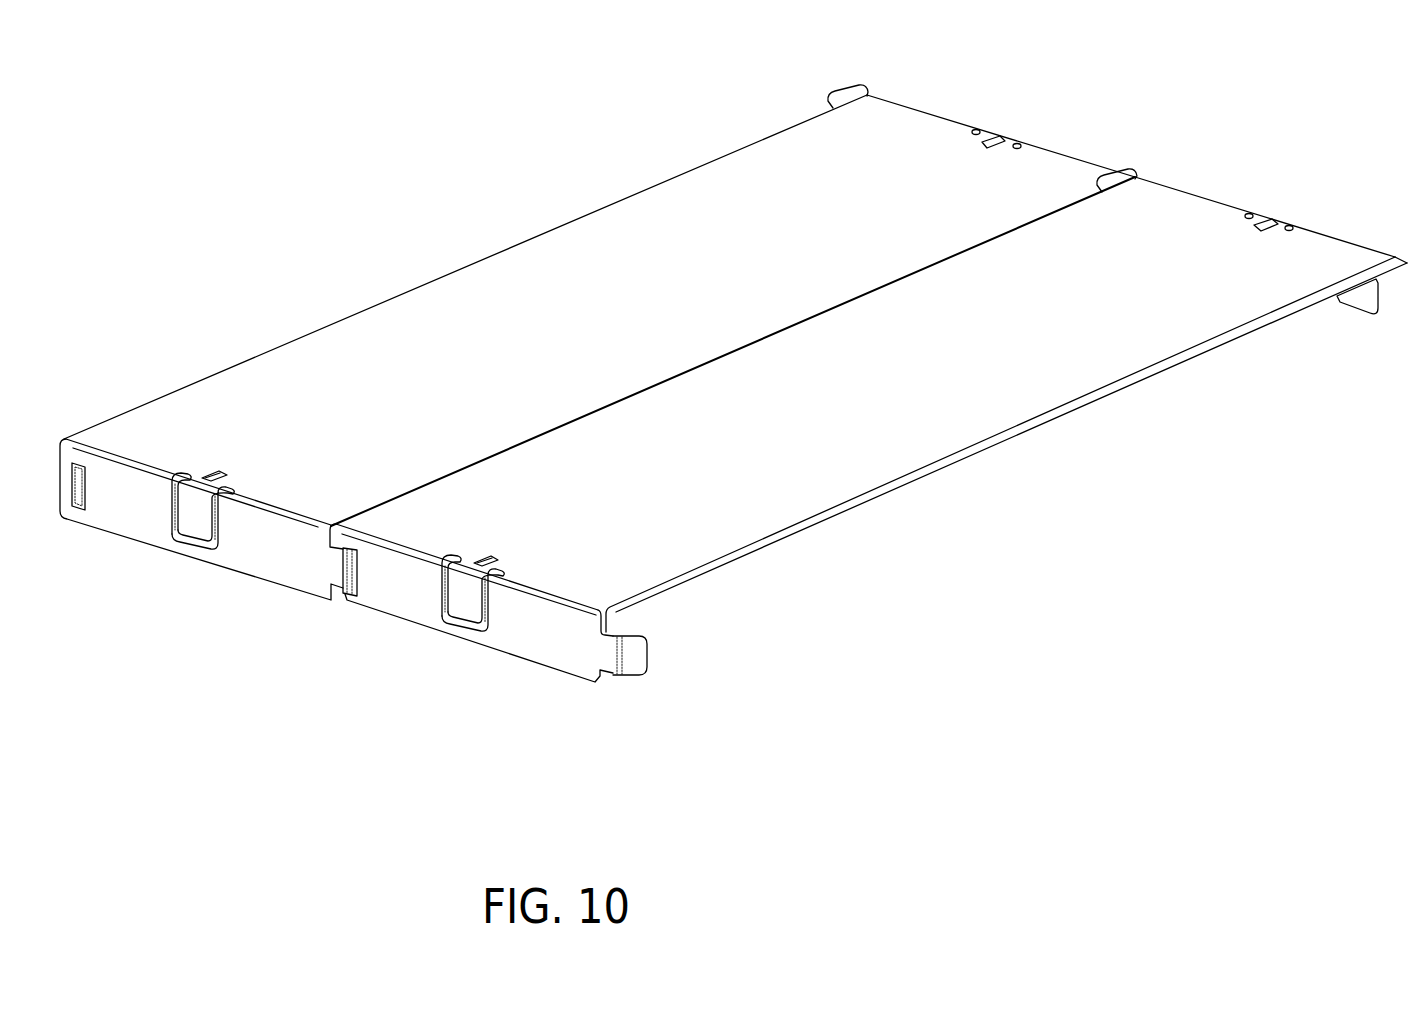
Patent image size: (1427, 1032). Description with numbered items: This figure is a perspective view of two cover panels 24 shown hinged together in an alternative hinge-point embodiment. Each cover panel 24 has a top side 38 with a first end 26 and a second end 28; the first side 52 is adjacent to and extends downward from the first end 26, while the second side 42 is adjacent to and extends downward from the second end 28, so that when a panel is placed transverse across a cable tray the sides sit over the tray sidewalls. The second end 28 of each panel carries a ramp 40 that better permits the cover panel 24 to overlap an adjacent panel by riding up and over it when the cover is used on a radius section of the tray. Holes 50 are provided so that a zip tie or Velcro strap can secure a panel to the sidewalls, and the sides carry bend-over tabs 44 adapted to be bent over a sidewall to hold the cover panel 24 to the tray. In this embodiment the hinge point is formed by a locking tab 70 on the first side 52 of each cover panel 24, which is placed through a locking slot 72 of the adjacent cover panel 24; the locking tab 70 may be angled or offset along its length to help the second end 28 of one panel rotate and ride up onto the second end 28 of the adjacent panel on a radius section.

The cover panel 24 is at (884, 589).
The first end 26 is at (114, 446).
The second end 28 is at (793, 140).
The top side 38 is at (634, 329).
The ramp 40 is at (847, 94).
The second side 42 is at (1357, 298).
The bend-over tab 44 is at (193, 522).
The hole 50 is at (997, 132).
The first side 52 is at (279, 568).
The locking tab 70 is at (332, 586).
The locking slot 72 is at (74, 504).